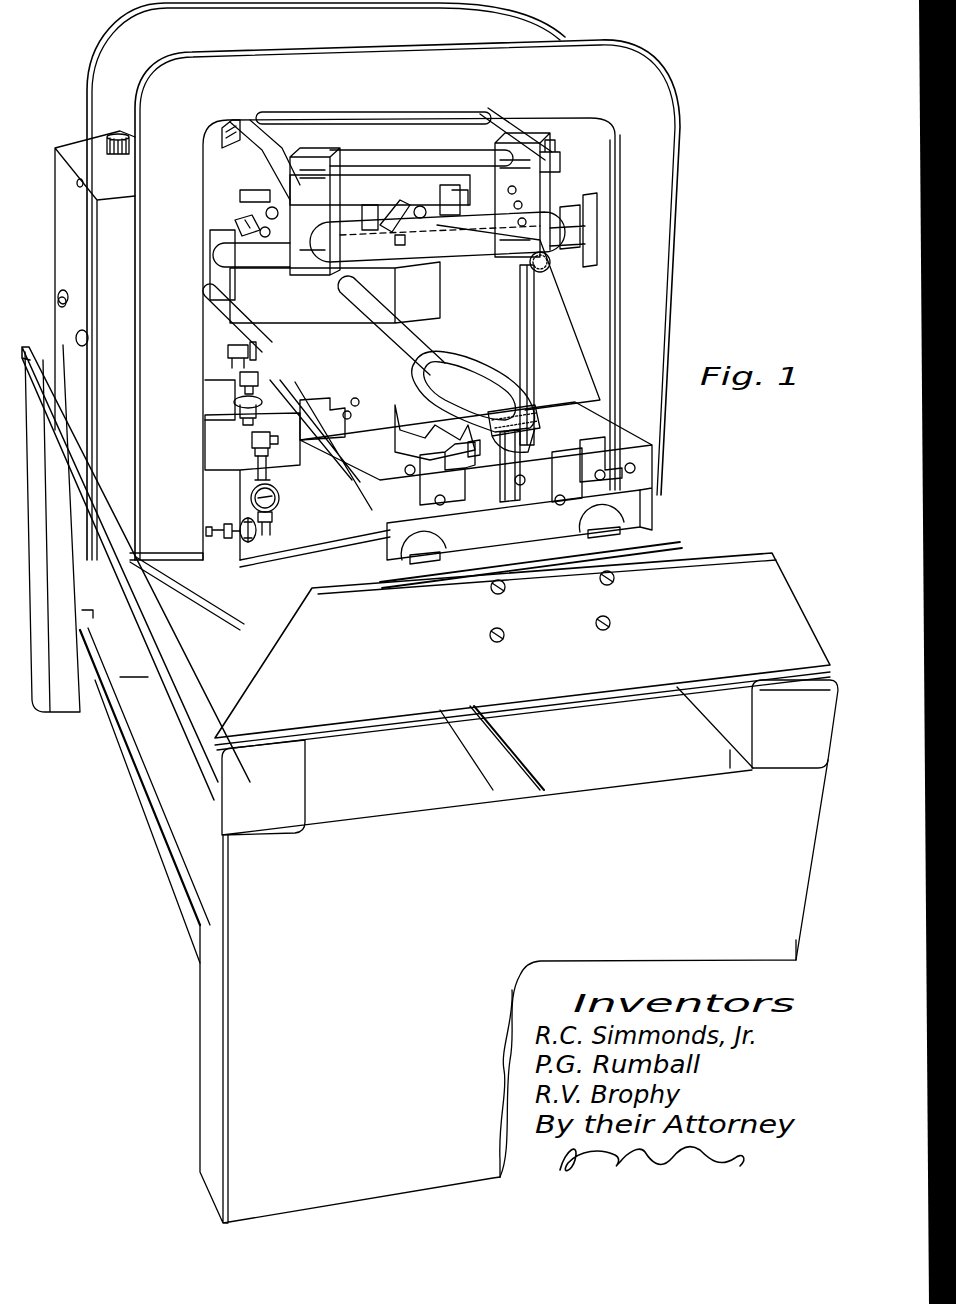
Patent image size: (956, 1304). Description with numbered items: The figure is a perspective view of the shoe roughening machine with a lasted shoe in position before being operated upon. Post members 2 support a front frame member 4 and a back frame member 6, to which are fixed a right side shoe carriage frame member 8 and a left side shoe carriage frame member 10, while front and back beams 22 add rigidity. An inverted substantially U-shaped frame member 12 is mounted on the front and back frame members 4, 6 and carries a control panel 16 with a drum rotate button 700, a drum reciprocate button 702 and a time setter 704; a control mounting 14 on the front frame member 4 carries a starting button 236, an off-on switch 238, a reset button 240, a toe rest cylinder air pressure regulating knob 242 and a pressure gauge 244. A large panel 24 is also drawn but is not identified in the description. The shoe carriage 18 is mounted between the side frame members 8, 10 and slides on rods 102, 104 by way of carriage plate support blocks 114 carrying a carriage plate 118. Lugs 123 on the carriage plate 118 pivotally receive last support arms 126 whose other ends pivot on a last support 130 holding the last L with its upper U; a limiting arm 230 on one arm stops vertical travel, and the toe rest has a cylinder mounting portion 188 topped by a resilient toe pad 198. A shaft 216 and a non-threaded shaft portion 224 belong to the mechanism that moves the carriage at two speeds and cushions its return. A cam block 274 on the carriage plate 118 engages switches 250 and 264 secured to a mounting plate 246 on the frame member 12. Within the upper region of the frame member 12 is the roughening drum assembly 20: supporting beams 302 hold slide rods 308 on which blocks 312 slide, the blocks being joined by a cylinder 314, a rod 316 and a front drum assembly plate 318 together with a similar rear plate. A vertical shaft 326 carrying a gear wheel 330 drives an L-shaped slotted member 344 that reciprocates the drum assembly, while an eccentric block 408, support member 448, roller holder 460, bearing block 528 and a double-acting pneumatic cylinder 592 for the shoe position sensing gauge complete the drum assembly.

The post members 2 is at (68, 716).
The front frame member 4 is at (167, 698).
The back frame member 6 is at (707, 695).
The right side shoe carriage frame member 8 is at (776, 556).
The left side shoe carriage frame member 10 is at (462, 303).
The inverted substantially U-shaped frame member 12 is at (648, 72).
The control mounting 14 is at (215, 477).
The control panel 16 is at (66, 240).
The shoe carriage 18 is at (546, 382).
The roughening drum assembly 20 is at (622, 183).
The front and back beams 22 is at (125, 768).
The front panel 24 is at (228, 962).
The rod 102 is at (227, 316).
The rod 104 is at (380, 325).
The carriage plate support blocks 114 is at (636, 530).
The carriage plate 118 is at (558, 453).
The lugs 123 is at (425, 473).
The last support arms 126 is at (528, 458).
The last support 130 is at (445, 430).
The cylinder mounting portion 188 is at (490, 500).
The toe pad 198 is at (532, 455).
The shaft 216 is at (355, 568).
The non-threaded shaft portion 224 is at (305, 573).
The limiting arm 230 is at (529, 466).
The starting button 236 is at (238, 404).
The off-on switch 238 is at (248, 438).
The reset button 240 is at (238, 464).
The toe rest cylinder air pressure regulating knob 242 is at (206, 531).
The toe rest cylinder air pressure gauge 244 is at (252, 505).
The mounting plate 246 is at (218, 385).
The switch 250 is at (246, 381).
The switch 264 is at (238, 351).
The cam block 274 is at (312, 410).
The drum assembly supporting beams 302 is at (220, 254).
The drum assembly slide rods 308 is at (592, 232).
The blocks 312 is at (538, 152).
The cylinder 314 is at (458, 240).
The rod 316 is at (438, 156).
The drum assembly plate 318 is at (262, 150).
The vertical shaft 326 is at (527, 310).
The gear wheel 330 is at (540, 262).
The L-shaped slotted member 344 is at (553, 166).
The eccentric block 408 is at (236, 125).
The support member 448 is at (238, 230).
The roller holder 460 is at (256, 197).
The bearing block 528 is at (354, 180).
The double-acting pneumatic cylinder 592 is at (388, 232).
The drum rotate button 700 is at (58, 295).
The drum reciprocate button 702 is at (76, 336).
The time setter 704 is at (117, 134).